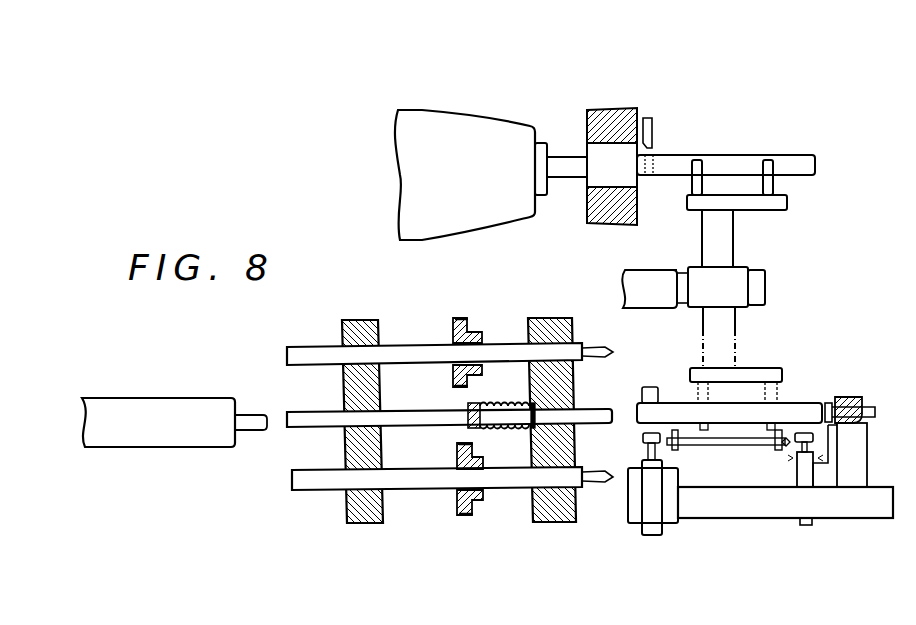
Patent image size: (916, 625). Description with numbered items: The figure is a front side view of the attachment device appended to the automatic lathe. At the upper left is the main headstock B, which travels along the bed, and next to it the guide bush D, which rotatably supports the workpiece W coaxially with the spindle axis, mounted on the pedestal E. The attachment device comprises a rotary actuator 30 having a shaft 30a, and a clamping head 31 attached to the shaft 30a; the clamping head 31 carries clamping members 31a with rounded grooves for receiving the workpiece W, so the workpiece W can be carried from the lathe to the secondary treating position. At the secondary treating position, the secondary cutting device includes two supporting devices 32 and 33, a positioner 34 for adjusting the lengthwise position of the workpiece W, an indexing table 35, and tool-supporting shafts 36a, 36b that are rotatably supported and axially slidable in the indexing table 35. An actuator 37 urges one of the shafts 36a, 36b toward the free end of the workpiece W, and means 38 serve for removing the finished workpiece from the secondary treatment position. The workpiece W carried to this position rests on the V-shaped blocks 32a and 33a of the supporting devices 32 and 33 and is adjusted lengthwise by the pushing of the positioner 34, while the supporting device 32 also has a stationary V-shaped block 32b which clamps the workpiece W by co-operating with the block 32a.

The main headstock B is at (513, 212).
The guide bush D is at (590, 151).
The pedestal E is at (589, 197).
The workpiece W is at (680, 160).
The rotary actuator 30 is at (655, 301).
The shaft 30a is at (764, 288).
The clamping head 31 is at (766, 211).
The clamping members 31a is at (765, 184).
The supporting device 32 is at (653, 533).
The V-shaped block 32a is at (644, 440).
The stationary V-shaped block 32b is at (643, 397).
The supporting device 33 is at (806, 526).
The V-shaped block 33a is at (797, 445).
The positioner 34 is at (854, 400).
The indexing table 35 is at (540, 513).
The tool-supporting shaft 36a is at (402, 349).
The tool-supporting shaft 36b is at (424, 409).
The actuator 37 is at (167, 436).
The removing means 38 is at (703, 447).